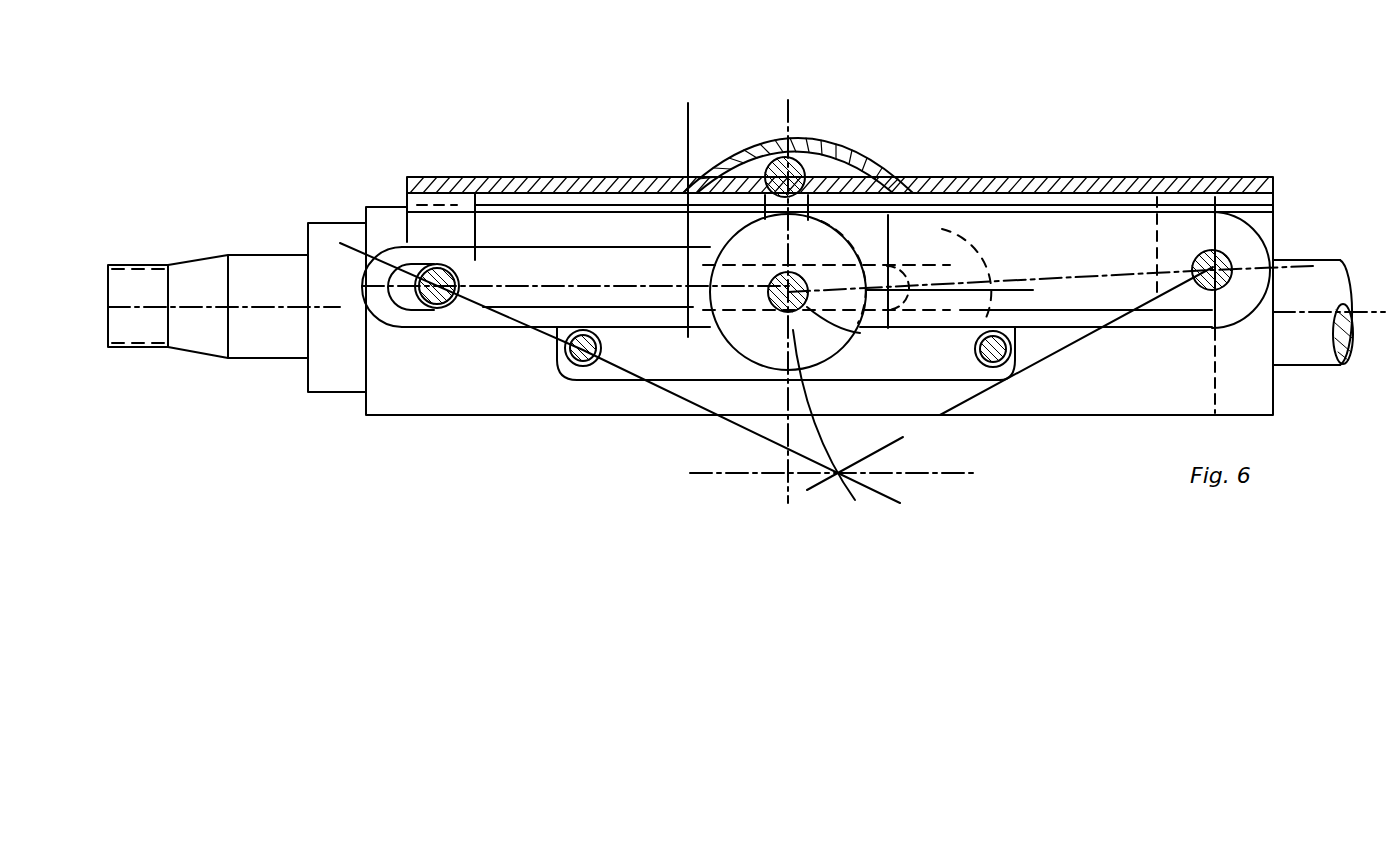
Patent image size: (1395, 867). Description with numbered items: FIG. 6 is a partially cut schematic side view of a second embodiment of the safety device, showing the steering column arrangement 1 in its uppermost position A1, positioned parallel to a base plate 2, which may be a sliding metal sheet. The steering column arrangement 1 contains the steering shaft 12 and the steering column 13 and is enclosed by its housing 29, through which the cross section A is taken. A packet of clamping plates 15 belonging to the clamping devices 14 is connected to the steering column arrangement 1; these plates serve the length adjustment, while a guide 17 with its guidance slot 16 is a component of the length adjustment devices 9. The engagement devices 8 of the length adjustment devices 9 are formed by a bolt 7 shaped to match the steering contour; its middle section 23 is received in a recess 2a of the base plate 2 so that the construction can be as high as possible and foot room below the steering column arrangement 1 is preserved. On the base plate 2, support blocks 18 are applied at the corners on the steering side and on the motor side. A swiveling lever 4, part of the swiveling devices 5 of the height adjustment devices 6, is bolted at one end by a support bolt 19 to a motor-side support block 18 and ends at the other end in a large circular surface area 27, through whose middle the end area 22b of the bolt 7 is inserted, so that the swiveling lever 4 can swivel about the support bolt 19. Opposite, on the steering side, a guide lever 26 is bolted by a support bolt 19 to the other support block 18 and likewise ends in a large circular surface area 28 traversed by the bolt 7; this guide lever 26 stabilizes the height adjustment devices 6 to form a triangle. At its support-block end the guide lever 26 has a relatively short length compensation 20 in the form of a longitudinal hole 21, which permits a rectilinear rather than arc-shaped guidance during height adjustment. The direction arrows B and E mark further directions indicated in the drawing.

The steering column arrangement 1 is at (340, 412).
The base plate 2 is at (445, 177).
The recess 2a is at (735, 152).
The swiveling lever 4 is at (1070, 240).
The swiveling devices 5 is at (972, 223).
The height adjustment devices 6 is at (1062, 377).
The bolt 7 is at (827, 150).
The engagement devices 8 is at (722, 152).
The length adjustment devices 9 is at (713, 350).
The steering shaft 12 is at (153, 280).
The steering column 13 is at (327, 240).
The clamping devices 14 is at (928, 381).
The clamping plates 15 is at (650, 350).
The guidance slot 16 is at (900, 273).
The guide 17 is at (660, 275).
The support block 18 is at (418, 222).
The support bolt 19 is at (1227, 233).
The length compensation 20 is at (365, 305).
The longitudinal hole 21 is at (410, 252).
The end area of the bolt 22b is at (849, 342).
The middle section of the bolt 23 is at (765, 200).
The guide lever 26 is at (498, 303).
The circular surface area 27 is at (782, 345).
The circular surface area 28 is at (880, 225).
The housing 29 is at (1007, 418).
The upper position A1 is at (312, 162).
The cross section A is at (700, 110).
The direction B is at (832, 102).
The position E is at (1076, 341).